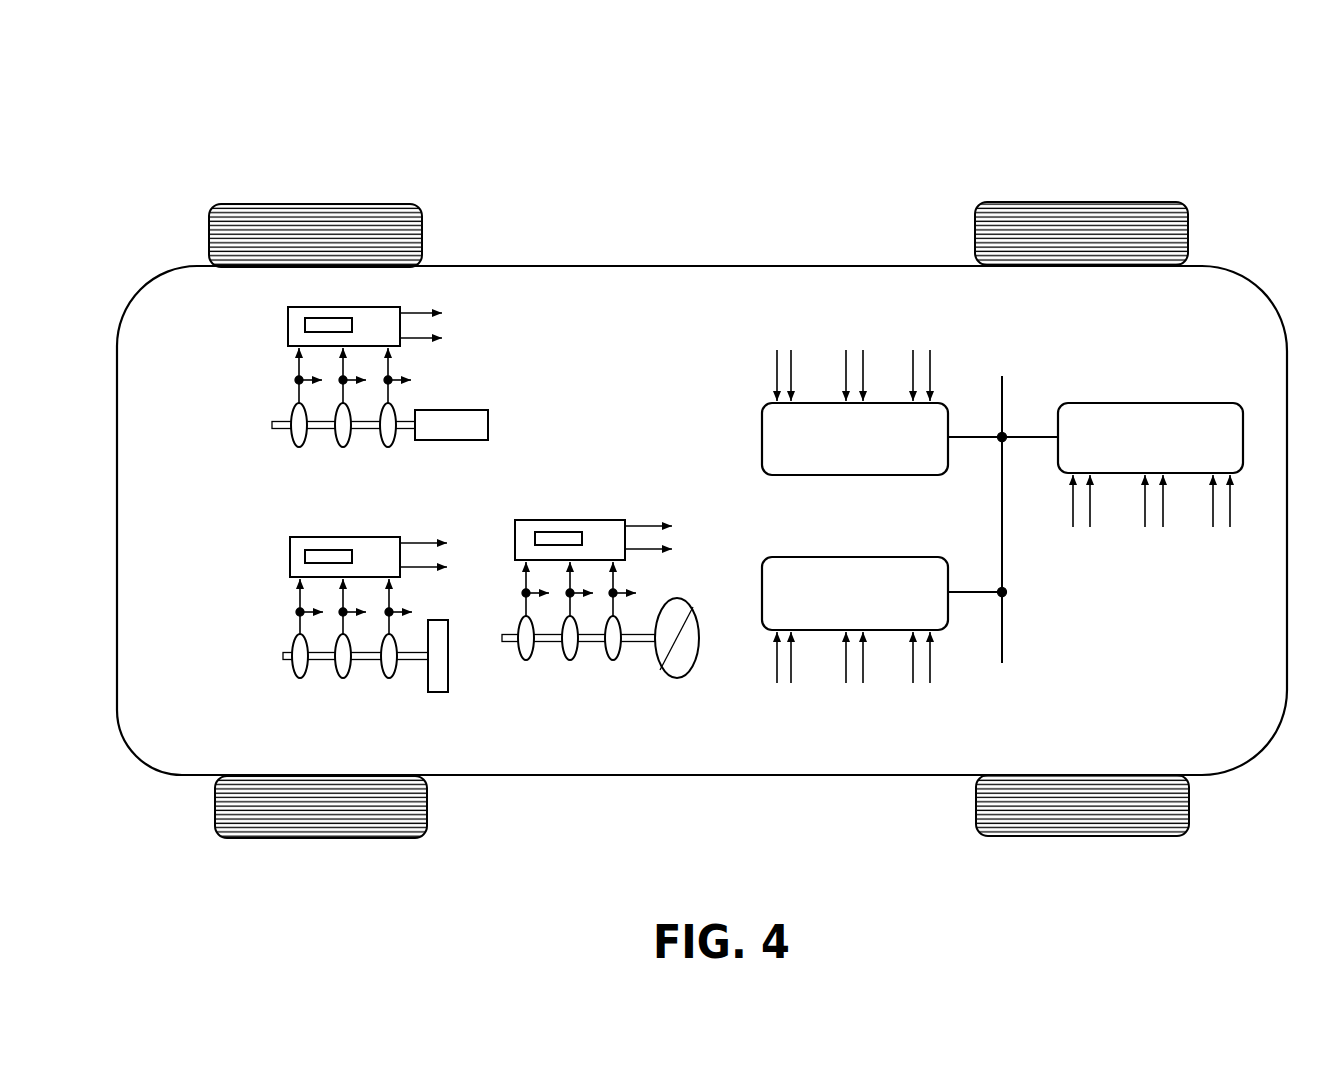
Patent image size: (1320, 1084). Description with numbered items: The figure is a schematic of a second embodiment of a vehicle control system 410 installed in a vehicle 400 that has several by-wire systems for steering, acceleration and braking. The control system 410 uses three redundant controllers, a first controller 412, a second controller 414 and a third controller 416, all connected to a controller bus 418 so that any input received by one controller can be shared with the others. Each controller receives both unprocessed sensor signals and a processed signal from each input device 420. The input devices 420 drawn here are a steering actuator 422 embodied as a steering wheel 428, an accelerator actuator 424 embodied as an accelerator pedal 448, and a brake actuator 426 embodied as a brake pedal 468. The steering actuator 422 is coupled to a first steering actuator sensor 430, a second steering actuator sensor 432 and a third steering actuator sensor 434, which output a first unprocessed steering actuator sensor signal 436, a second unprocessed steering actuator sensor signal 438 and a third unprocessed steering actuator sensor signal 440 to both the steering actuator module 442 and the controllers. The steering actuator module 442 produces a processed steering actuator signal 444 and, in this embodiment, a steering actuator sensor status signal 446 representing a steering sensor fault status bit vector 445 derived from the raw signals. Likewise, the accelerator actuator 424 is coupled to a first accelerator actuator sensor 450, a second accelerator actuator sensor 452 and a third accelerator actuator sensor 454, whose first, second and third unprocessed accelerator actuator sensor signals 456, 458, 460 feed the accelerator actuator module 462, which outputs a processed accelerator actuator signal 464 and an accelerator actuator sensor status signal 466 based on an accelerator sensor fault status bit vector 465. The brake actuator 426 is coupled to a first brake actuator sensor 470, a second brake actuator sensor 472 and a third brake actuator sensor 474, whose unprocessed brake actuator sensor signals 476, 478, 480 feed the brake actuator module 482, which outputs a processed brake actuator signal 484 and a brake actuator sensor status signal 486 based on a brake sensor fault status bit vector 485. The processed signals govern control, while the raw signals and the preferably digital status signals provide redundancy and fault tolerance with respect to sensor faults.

The vehicle 400 is at (843, 198).
The vehicle control system 410 is at (752, 264).
The first controller 412 is at (790, 475).
The second controller 414 is at (853, 557).
The third controller 416 is at (1152, 403).
The controller bus 418 is at (1002, 648).
The input device 420 is at (478, 430).
The steering actuator 422 is at (668, 672).
The accelerator actuator 424 is at (427, 440).
The brake actuator 426 is at (429, 688).
The steering wheel 428 is at (681, 672).
The first steering actuator sensor 430 is at (523, 660).
The second steering actuator sensor 432 is at (568, 660).
The third steering actuator sensor 434 is at (610, 660).
The first unprocessed steering actuator sensor signal 436 is at (526, 620).
The second unprocessed steering actuator sensor signal 438 is at (570, 612).
The third unprocessed steering actuator sensor signal 440 is at (615, 588).
The steering actuator module 442 is at (572, 520).
The processed steering actuator signal 444 is at (640, 525).
The steering sensor fault status bit vector 445 is at (547, 532).
The steering actuator sensor status signal 446 is at (640, 549).
The accelerator pedal 448 is at (487, 428).
The first accelerator actuator sensor 450 is at (295, 444).
The second accelerator actuator sensor 452 is at (340, 446).
The third accelerator actuator sensor 454 is at (385, 446).
The first unprocessed accelerator actuator sensor signal 456 is at (296, 400).
The second unprocessed accelerator actuator sensor signal 458 is at (343, 400).
The third unprocessed accelerator actuator sensor signal 460 is at (388, 375).
The accelerator actuator module 462 is at (288, 322).
The processed accelerator actuator signal 464 is at (417, 312).
The accelerator sensor fault status bit vector 465 is at (317, 317).
The accelerator actuator sensor status signal 466 is at (418, 338).
The brake pedal 468 is at (442, 672).
The first brake actuator sensor 470 is at (297, 678).
The second brake actuator sensor 472 is at (340, 678).
The third brake actuator sensor 474 is at (386, 678).
The first unprocessed brake actuator sensor signal 476 is at (297, 620).
The second unprocessed brake actuator sensor signal 478 is at (343, 632).
The third unprocessed brake actuator sensor signal 480 is at (389, 607).
The brake actuator module 482 is at (290, 562).
The processed brake actuator signal 484 is at (405, 542).
The brake sensor fault status bit vector 485 is at (305, 552).
The brake actuator sensor status signal 486 is at (418, 567).